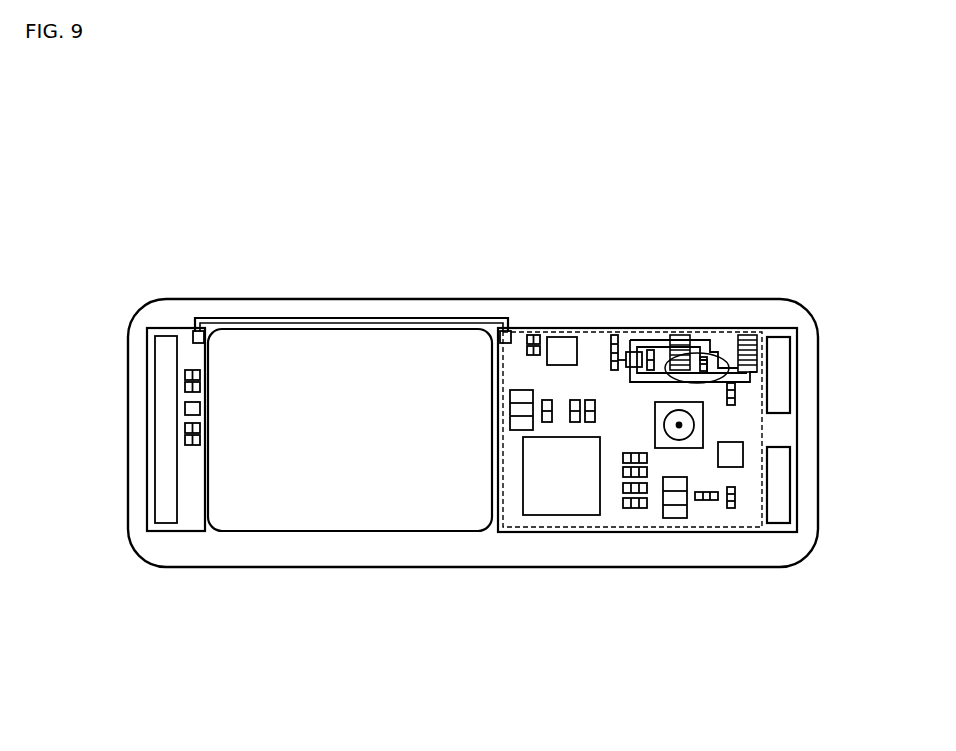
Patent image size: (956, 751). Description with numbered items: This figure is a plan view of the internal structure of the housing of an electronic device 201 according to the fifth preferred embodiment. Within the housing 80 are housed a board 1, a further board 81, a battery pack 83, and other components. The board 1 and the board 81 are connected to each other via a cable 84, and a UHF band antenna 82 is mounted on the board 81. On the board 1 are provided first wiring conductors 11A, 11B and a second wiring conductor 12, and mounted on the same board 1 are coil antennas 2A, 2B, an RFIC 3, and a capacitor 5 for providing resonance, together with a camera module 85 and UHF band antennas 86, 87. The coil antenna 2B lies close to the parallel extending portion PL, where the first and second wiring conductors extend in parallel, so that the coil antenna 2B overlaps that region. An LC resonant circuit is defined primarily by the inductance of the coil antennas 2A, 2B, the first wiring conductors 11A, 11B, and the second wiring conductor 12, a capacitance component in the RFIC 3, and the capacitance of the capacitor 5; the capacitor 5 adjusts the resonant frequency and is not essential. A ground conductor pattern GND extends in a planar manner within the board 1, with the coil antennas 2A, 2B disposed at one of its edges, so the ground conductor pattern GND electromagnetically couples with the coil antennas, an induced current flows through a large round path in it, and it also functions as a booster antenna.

The electronic device 201 is at (254, 236).
The housing 80 is at (793, 300).
The board 81 is at (190, 523).
The UHF band antenna 82 is at (163, 422).
The battery pack 83 is at (360, 523).
The cable 84 is at (348, 317).
The board 1 is at (695, 532).
The ground conductor pattern GND is at (613, 515).
The RFIC 3 is at (602, 348).
The capacitor 5 is at (634, 350).
The first wiring conductor 11A is at (650, 348).
The first wiring conductor 11B is at (705, 352).
The second wiring conductor 12 is at (697, 346).
The coil antenna 2A is at (748, 335).
The coil antenna 2B is at (681, 335).
The parallel extending portion PL is at (677, 382).
The camera module 85 is at (703, 427).
The UHF band antenna 86 is at (782, 375).
The UHF band antenna 87 is at (782, 487).